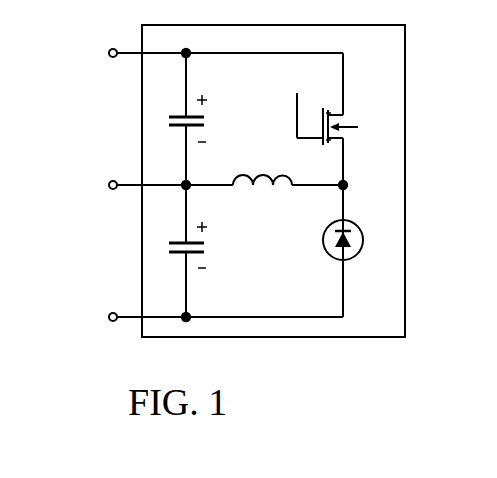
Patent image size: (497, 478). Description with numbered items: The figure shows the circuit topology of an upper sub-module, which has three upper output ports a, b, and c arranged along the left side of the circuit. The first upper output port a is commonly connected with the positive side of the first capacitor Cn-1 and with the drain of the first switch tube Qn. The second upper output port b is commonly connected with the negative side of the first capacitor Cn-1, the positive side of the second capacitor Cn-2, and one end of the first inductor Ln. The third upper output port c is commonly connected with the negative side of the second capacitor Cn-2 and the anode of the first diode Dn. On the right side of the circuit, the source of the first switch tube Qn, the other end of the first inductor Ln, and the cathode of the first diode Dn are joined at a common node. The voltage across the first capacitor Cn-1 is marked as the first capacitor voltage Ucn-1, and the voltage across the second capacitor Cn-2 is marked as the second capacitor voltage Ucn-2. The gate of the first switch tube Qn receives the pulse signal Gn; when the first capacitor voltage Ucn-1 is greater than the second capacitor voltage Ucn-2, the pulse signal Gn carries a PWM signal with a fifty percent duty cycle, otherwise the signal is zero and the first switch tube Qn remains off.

The first upper output port a is at (207, 52).
The second upper output port b is at (209, 184).
The third upper output port c is at (132, 316).
The first capacitor Cn-1 is at (138, 122).
The second capacitor Cn-2 is at (138, 261).
The first capacitor voltage Ucn-1 is at (235, 118).
The second capacitor voltage Ucn-2 is at (238, 246).
The first inductor Ln is at (262, 166).
The first switch tube Qn is at (352, 144).
The pulse signal Gn is at (313, 103).
The first diode Dn is at (332, 259).